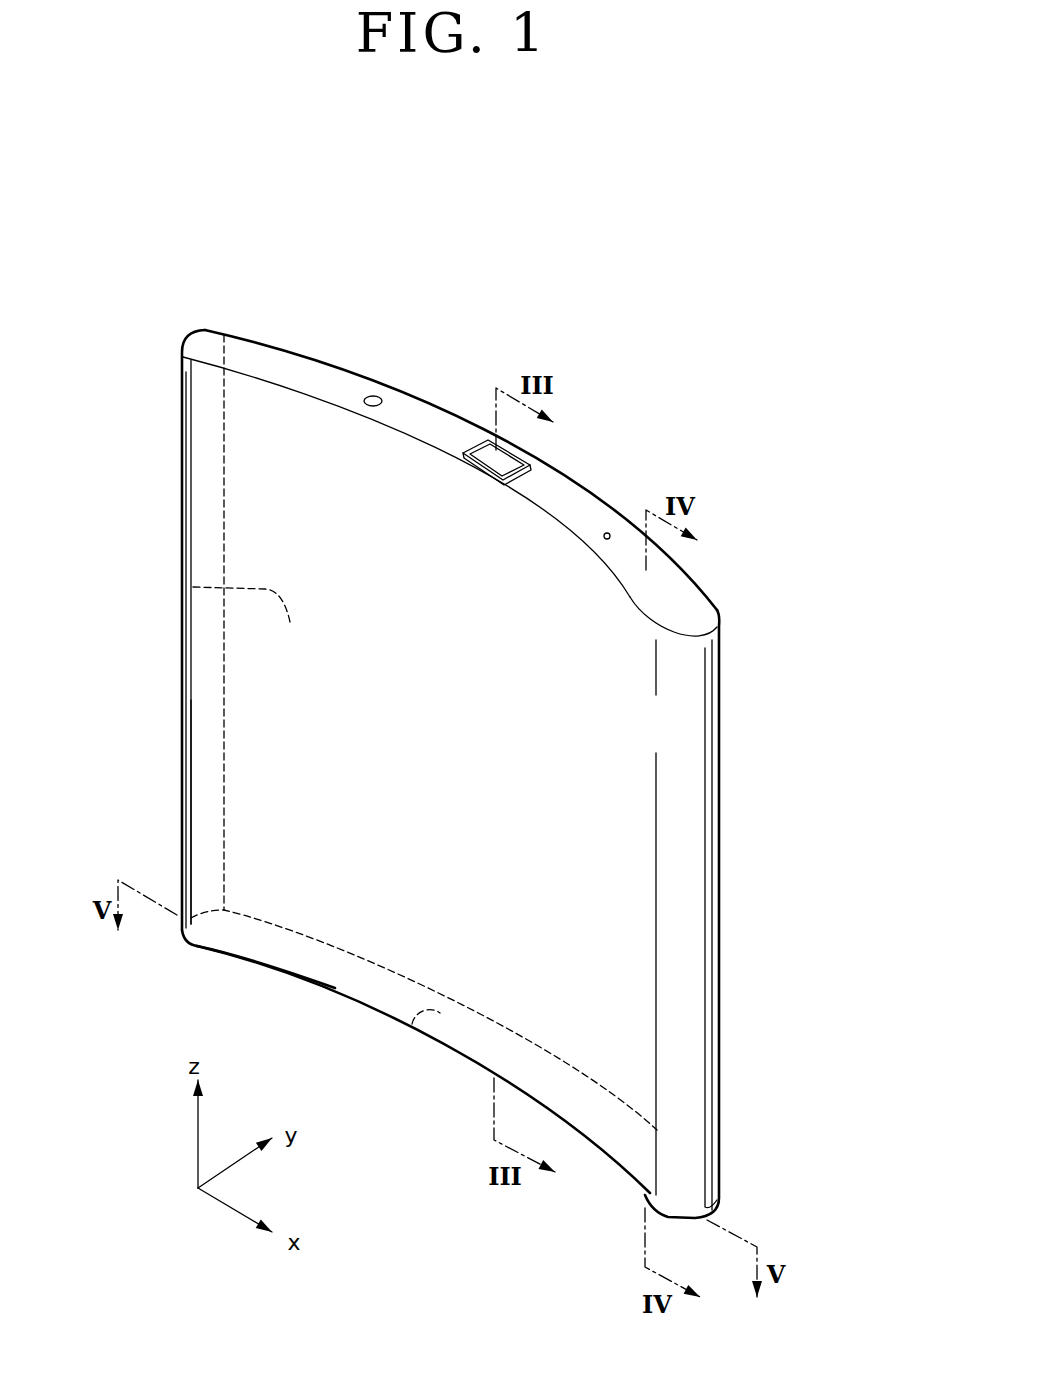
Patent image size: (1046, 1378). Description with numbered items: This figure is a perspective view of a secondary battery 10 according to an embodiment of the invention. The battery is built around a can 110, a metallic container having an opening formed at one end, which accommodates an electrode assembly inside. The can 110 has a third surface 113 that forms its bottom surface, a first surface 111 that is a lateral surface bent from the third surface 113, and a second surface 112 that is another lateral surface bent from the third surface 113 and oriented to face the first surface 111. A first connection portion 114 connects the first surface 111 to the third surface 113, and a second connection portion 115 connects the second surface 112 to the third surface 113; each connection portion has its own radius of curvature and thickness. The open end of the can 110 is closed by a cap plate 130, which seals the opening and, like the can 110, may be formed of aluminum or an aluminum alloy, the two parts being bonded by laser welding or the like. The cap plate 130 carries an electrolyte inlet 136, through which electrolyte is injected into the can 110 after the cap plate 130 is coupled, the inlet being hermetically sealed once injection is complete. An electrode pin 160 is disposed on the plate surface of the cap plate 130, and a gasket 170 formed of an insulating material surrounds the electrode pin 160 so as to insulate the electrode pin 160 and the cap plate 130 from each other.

The secondary battery 10 is at (654, 288).
The can 110 is at (700, 760).
The first surface 111 is at (190, 585).
The second surface 112 is at (290, 778).
The third surface 113 is at (411, 1024).
The first connection portion 114 is at (632, 1102).
The second connection portion 115 is at (305, 983).
The cap plate 130 is at (690, 594).
The electrolyte inlet 136 is at (374, 395).
The electrode pin 160 is at (490, 450).
The gasket 170 is at (532, 466).